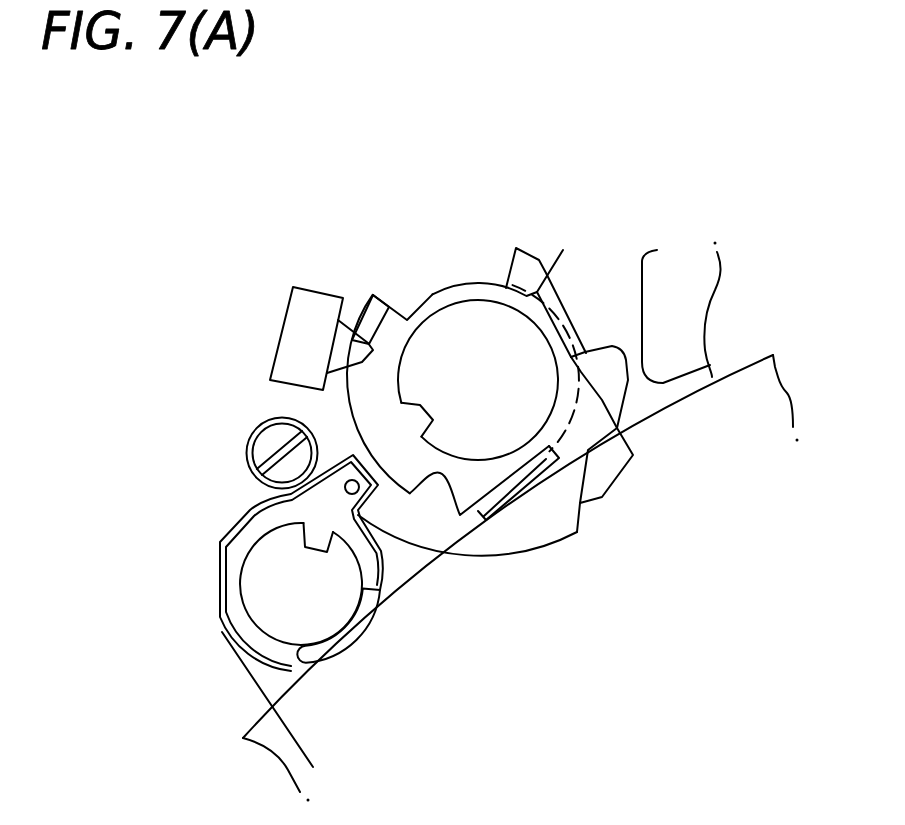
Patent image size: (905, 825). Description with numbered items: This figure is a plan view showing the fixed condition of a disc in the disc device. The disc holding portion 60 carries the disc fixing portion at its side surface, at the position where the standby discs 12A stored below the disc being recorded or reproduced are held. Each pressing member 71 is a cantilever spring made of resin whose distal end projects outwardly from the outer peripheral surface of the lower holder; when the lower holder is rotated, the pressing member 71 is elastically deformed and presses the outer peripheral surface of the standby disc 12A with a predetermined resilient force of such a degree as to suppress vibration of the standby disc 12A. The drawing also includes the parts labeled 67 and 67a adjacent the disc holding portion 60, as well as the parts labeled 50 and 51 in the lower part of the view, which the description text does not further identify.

The disc holding portion 60 is at (485, 258).
The engaging portion of lever 67a is at (397, 307).
The lever 67 is at (292, 333).
The screw 51 is at (255, 443).
The gear 50 is at (282, 592).
The pressing member 71 is at (521, 498).
The standby disc 12A is at (747, 383).